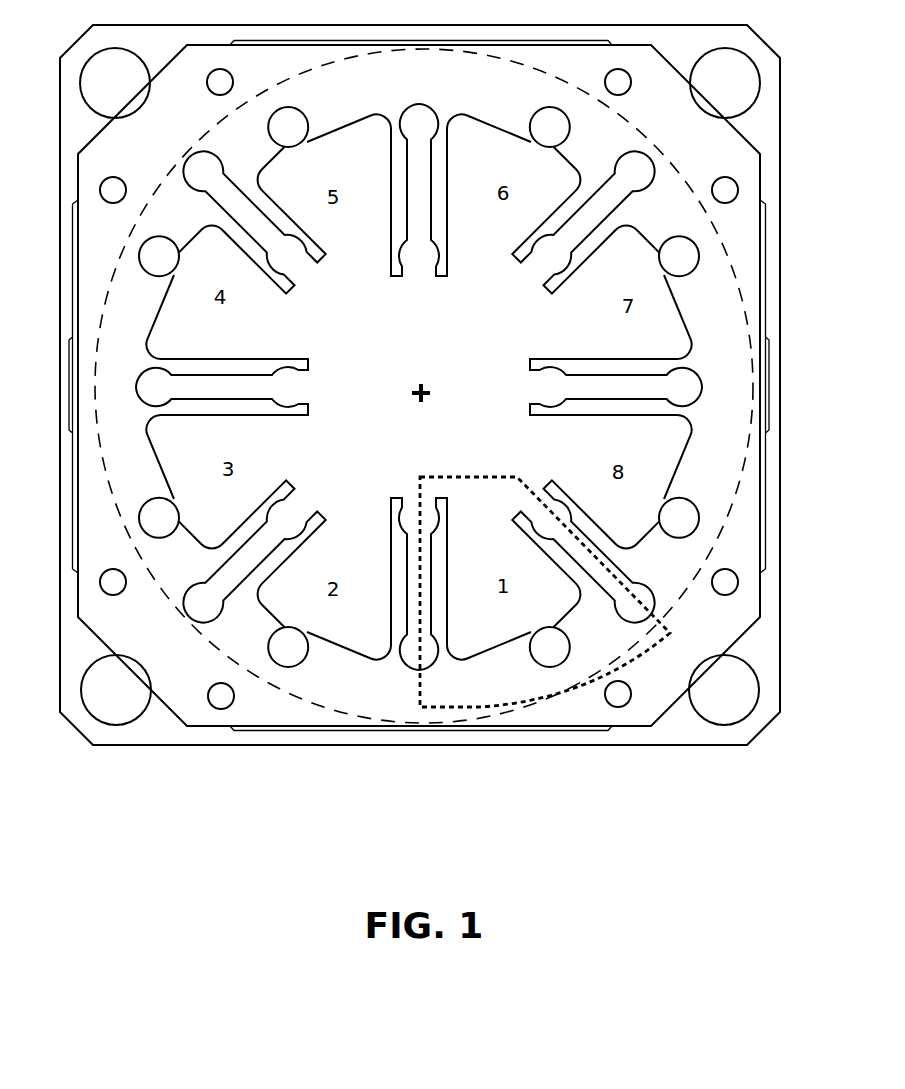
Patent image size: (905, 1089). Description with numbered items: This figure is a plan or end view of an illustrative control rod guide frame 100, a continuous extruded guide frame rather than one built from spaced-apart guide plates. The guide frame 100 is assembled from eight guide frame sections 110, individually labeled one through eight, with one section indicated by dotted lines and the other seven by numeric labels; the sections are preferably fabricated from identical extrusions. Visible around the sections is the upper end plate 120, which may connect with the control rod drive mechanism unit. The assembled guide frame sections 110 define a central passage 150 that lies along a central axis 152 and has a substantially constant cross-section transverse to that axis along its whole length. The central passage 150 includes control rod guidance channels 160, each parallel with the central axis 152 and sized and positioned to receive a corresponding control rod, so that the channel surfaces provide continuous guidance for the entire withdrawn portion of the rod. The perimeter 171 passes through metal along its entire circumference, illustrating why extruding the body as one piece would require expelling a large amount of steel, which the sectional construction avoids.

The control rod guide frame 100 is at (351, 767).
The guide frame section 110 is at (484, 710).
The upper end plate 120 is at (157, 724).
The central passage 150 is at (418, 320).
The central axis 152 is at (426, 386).
The control rod guidance channel 160 is at (153, 392).
The perimeter 171 is at (262, 680).